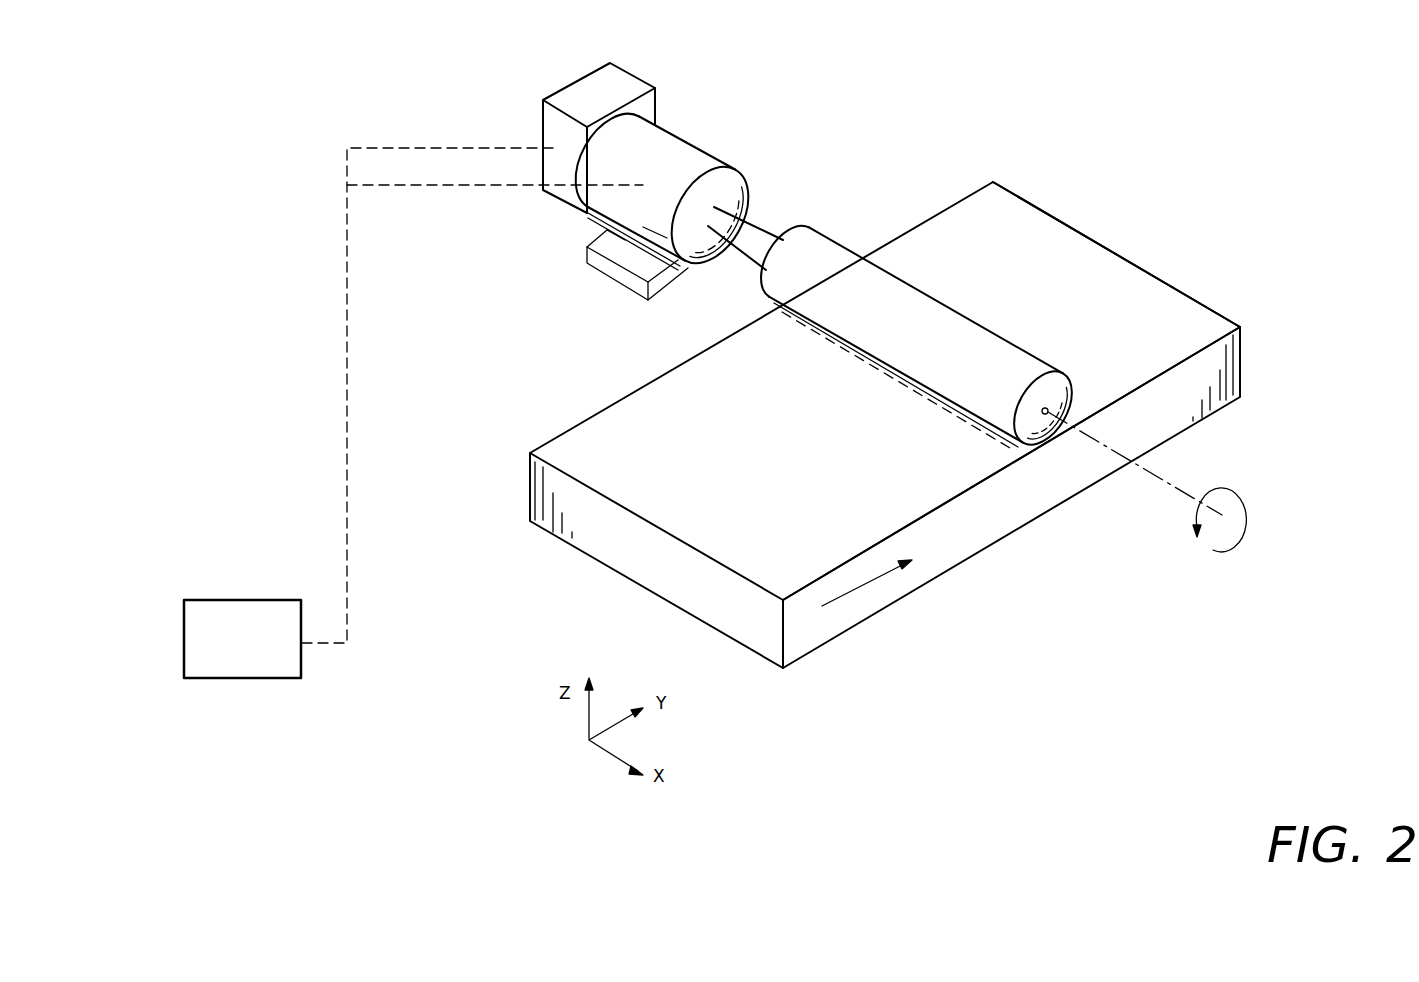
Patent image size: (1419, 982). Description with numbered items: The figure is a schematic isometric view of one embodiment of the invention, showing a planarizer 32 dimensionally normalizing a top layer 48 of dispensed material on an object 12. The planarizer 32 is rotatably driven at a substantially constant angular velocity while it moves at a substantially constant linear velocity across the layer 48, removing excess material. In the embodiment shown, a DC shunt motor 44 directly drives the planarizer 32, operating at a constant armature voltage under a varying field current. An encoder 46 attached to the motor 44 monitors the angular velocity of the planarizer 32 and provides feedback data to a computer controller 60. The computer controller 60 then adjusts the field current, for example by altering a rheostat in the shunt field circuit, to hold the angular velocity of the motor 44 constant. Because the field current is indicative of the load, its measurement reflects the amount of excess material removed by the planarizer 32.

The object 12 is at (504, 482).
The planarizer 32 is at (835, 268).
The motor 44 is at (702, 147).
The encoder 46 is at (552, 130).
The top layer 48 is at (1143, 320).
The computer controller 60 is at (232, 598).